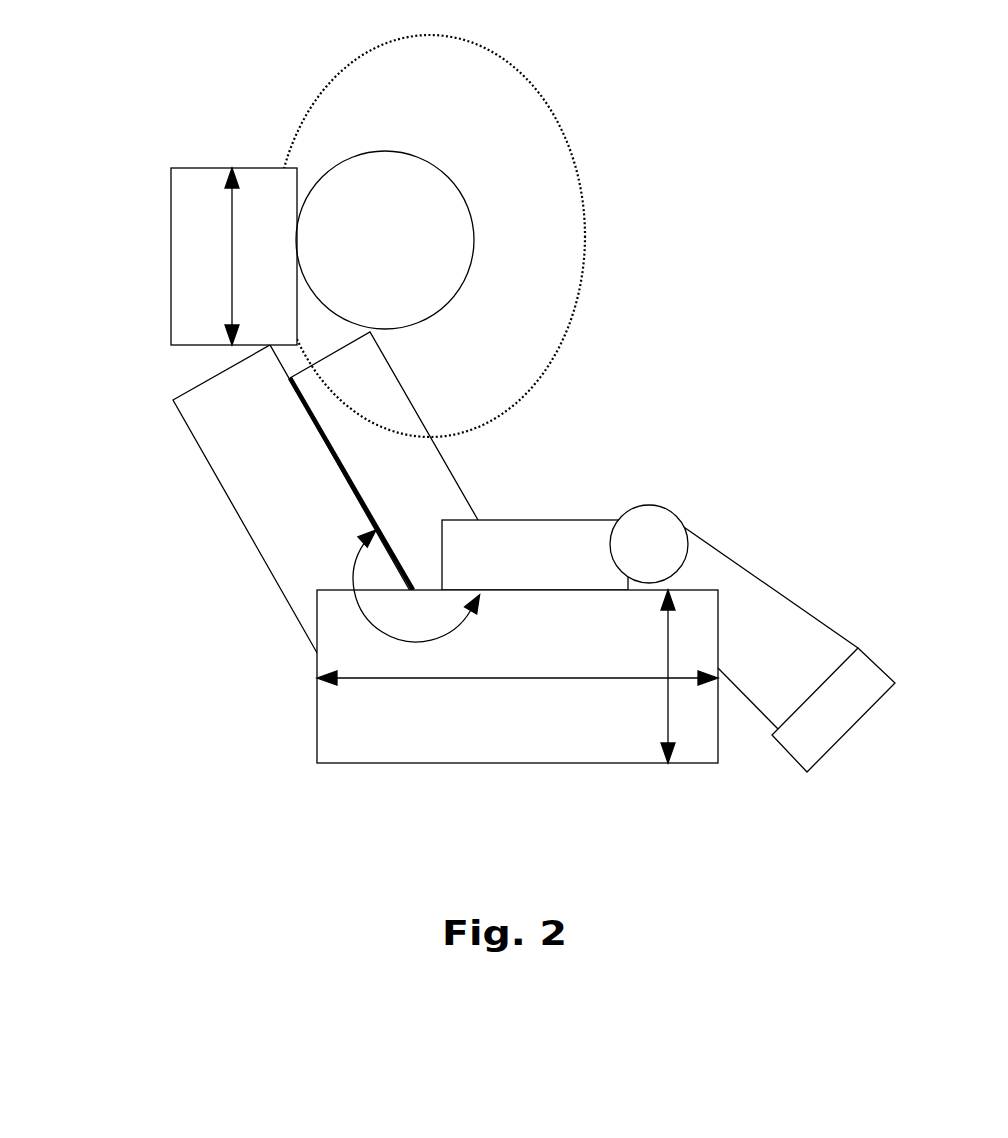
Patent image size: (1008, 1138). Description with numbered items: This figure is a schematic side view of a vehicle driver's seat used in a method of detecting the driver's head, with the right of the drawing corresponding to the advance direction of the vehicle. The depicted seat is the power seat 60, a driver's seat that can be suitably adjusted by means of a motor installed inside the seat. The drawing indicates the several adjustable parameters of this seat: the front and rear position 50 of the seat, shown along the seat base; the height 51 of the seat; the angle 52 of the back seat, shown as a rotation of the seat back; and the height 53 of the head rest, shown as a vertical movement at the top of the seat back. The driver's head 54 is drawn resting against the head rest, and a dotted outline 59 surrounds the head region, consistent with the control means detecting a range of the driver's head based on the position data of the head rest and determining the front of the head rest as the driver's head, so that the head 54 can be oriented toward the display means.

The front and rear position of the seat 50 is at (558, 678).
The height of the seat 51 is at (668, 640).
The angle of the back seat 52 is at (370, 627).
The height of the head rest 53 is at (232, 243).
The driver's head 54 is at (353, 182).
The movement range 59 is at (518, 67).
The power seat 60 is at (185, 545).